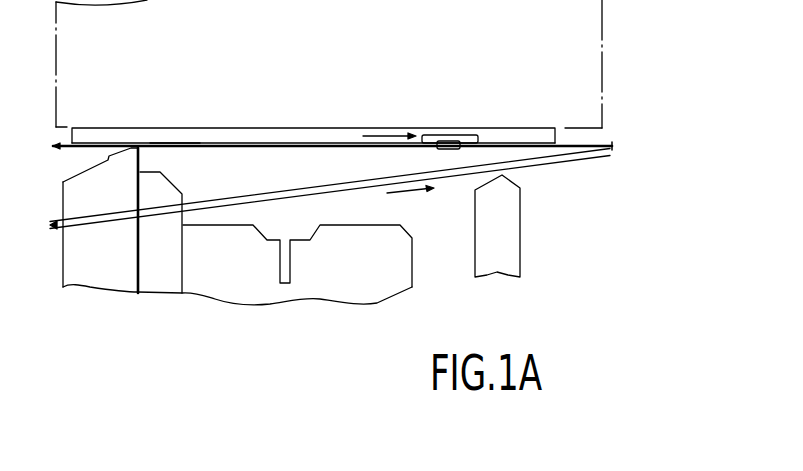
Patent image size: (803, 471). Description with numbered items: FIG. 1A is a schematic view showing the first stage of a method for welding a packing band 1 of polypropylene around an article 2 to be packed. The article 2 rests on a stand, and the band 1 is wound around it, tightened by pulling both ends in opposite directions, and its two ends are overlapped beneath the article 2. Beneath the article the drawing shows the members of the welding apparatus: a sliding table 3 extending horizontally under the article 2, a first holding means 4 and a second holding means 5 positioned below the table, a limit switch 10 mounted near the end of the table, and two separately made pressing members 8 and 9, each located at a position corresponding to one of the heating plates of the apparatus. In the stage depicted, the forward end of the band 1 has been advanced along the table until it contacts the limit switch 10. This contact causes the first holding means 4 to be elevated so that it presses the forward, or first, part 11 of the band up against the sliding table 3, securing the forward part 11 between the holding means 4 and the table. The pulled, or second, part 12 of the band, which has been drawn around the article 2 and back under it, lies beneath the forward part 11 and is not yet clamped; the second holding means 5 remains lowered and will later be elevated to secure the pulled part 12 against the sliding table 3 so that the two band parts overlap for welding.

The packing band 1 is at (258, 143).
The article to be packed 2 is at (602, 110).
The sliding table 3 is at (303, 138).
The first holding means 4 is at (93, 171).
The second holding means 5 is at (510, 205).
The pressing member 8 is at (254, 270).
The pressing member 9 is at (393, 259).
The limit switch 10 is at (457, 143).
The forward part of the band 11 is at (172, 143).
The pulled part of the band 12 is at (357, 180).